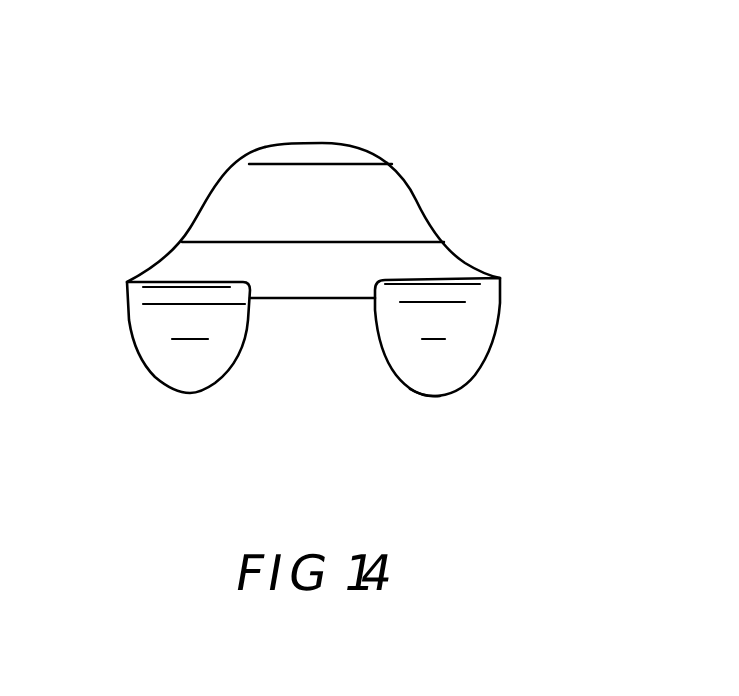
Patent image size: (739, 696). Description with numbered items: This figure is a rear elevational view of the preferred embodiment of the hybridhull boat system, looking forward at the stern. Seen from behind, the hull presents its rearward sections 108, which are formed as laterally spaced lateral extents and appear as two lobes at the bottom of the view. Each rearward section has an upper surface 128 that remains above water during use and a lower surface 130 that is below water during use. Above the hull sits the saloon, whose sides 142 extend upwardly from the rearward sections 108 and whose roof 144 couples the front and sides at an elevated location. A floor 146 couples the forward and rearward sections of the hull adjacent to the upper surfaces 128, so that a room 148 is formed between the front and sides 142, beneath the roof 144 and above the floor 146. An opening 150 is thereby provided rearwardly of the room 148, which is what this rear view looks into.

The rearward sections 108 is at (578, 392).
The upper surfaces 128 is at (587, 217).
The lower surfaces 130 is at (505, 447).
The sides 142 is at (210, 197).
The roof 144 is at (367, 57).
The floor 146 is at (315, 398).
The room 148 is at (487, 98).
The opening 150 is at (555, 158).